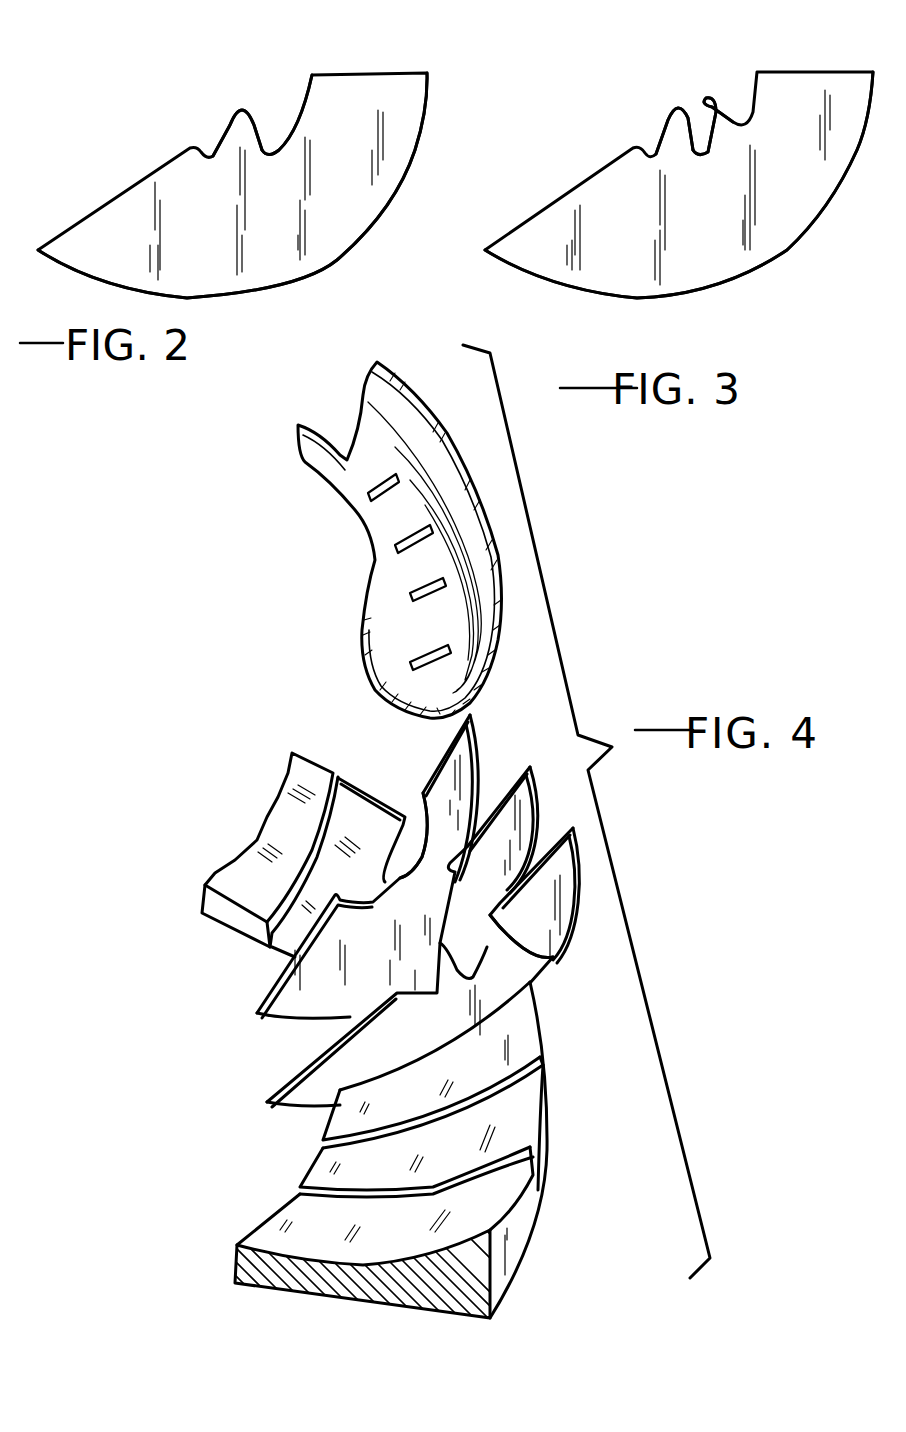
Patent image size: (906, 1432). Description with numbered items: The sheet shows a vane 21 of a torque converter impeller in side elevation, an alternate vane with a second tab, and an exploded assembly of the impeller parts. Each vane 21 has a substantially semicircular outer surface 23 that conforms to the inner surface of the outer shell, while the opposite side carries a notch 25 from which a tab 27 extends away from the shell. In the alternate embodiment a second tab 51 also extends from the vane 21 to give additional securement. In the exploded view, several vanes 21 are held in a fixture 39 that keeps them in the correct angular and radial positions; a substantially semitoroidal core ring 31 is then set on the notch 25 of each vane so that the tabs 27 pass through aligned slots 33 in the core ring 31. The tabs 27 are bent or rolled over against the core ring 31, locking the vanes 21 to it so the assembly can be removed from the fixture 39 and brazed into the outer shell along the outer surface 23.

In FIG. 2, the vane 21 is at (377, 97).
In FIG. 3, the vane 21 is at (780, 224).
In FIG. 4, the vane 21 is at (518, 803).
In FIG. 2, the outer surface 23 is at (415, 150).
In FIG. 3, the outer surface 23 is at (755, 272).
In FIG. 2, the notch 25 is at (289, 130).
In FIG. 4, the notch 25 is at (550, 983).
In FIG. 2, the tab 27 is at (232, 125).
In FIG. 3, the tab 27 is at (673, 122).
In FIG. 4, the tab 27 is at (385, 878).
In FIG. 3, the second tab 51 is at (715, 97).
In FIG. 4, the core ring 31 is at (315, 478).
In FIG. 4, the slots 33 is at (413, 590).
In FIG. 4, the fixture 39 is at (515, 1232).